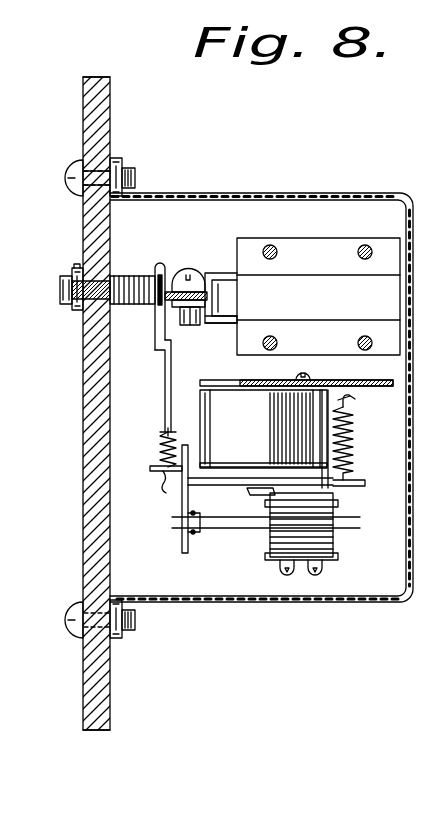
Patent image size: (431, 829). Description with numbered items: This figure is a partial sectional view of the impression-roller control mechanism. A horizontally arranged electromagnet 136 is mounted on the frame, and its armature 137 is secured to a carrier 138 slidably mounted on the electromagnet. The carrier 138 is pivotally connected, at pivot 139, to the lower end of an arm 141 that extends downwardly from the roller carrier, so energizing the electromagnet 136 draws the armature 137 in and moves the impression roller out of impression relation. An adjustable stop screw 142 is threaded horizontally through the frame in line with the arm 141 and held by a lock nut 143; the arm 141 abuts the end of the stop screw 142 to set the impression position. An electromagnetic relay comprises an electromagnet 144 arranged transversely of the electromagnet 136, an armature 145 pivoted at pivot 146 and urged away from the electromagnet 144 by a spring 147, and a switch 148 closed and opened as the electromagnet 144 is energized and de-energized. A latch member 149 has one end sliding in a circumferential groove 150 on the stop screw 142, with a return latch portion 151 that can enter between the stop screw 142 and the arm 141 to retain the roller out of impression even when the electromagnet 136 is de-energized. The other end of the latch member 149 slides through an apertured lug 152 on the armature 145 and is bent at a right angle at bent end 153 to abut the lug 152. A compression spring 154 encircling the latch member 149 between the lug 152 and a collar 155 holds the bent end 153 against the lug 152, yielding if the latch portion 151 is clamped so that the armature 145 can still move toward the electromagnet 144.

The electromagnet 136 is at (325, 250).
The armature 137 is at (228, 282).
The carrier 138 is at (236, 326).
The pivotal connection 139 is at (188, 276).
The arm 141 is at (192, 326).
The adjustable stop screw 142 is at (62, 302).
The lock nut 143 is at (78, 266).
The electromagnet 144 is at (268, 428).
The armature 145 is at (238, 486).
The pivot 146 is at (346, 490).
The spring 147 is at (372, 428).
The switch 148 is at (244, 541).
The latch member 149 is at (165, 356).
The circumferential groove 150 is at (152, 305).
The return latch portion 151 is at (165, 272).
The apertured lug 152 is at (150, 468).
The bent end 153 is at (164, 490).
The compression spring 154 is at (160, 450).
The collar 155 is at (165, 430).